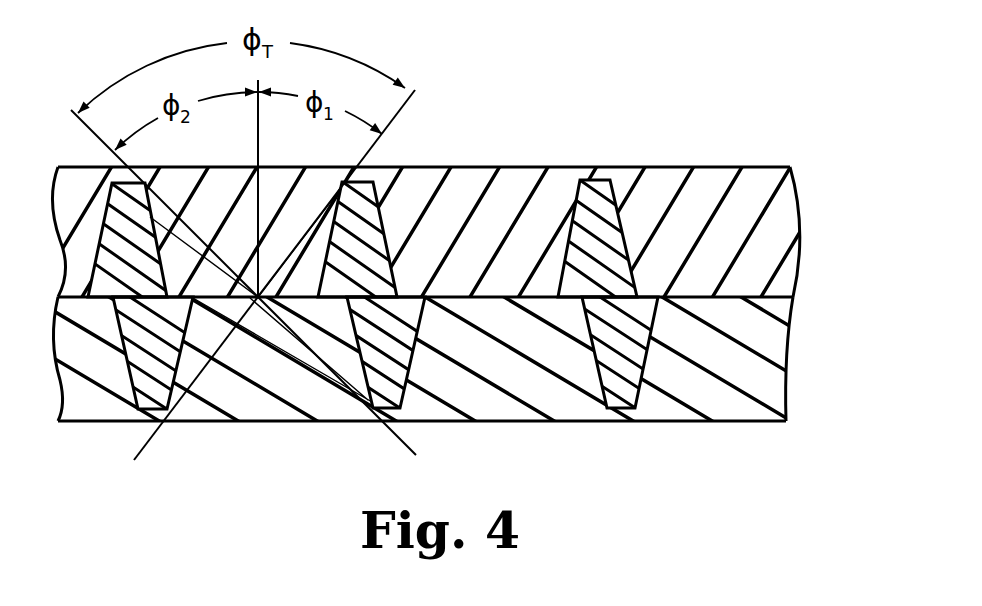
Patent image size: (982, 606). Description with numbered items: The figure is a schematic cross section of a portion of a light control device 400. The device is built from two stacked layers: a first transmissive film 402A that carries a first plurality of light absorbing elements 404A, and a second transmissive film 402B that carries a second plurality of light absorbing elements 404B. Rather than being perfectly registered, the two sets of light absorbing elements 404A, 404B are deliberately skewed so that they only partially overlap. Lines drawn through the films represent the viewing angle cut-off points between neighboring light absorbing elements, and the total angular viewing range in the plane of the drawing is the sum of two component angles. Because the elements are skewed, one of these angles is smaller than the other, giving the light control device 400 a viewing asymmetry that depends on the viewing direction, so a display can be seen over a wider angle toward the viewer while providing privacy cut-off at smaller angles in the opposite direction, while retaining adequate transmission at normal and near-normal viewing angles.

The light control device 400 is at (758, 127).
The first transmissive film 402A is at (750, 220).
The second transmissive film 402B is at (727, 355).
The first plurality of light absorbing elements 404A is at (597, 237).
The second plurality of light absorbing elements 404B is at (624, 372).